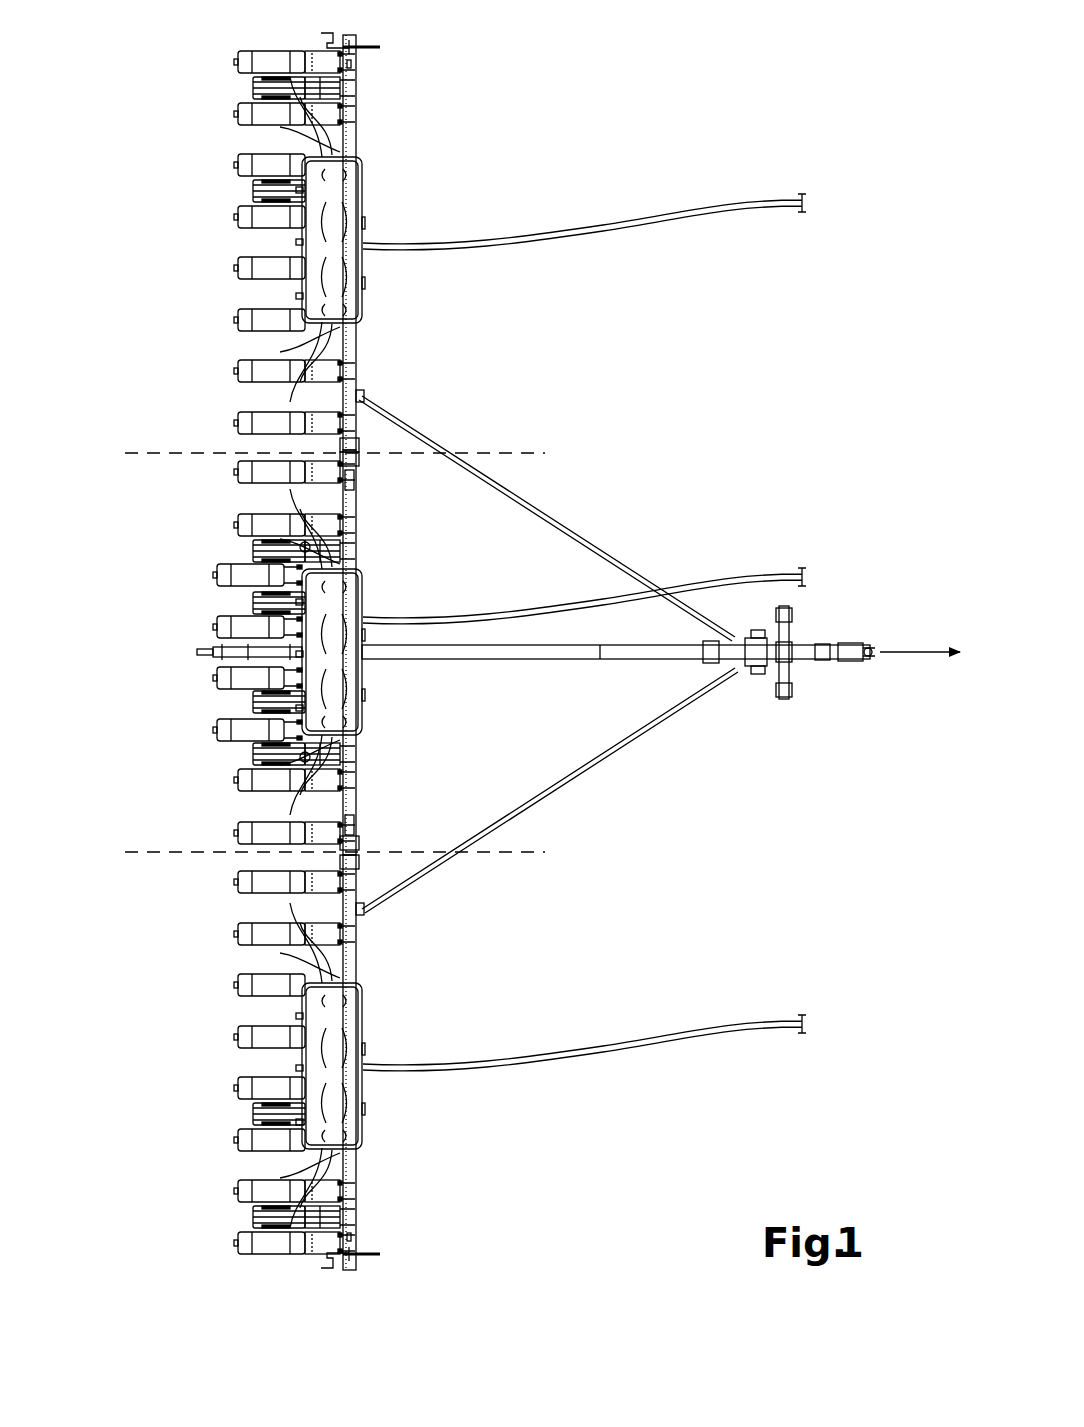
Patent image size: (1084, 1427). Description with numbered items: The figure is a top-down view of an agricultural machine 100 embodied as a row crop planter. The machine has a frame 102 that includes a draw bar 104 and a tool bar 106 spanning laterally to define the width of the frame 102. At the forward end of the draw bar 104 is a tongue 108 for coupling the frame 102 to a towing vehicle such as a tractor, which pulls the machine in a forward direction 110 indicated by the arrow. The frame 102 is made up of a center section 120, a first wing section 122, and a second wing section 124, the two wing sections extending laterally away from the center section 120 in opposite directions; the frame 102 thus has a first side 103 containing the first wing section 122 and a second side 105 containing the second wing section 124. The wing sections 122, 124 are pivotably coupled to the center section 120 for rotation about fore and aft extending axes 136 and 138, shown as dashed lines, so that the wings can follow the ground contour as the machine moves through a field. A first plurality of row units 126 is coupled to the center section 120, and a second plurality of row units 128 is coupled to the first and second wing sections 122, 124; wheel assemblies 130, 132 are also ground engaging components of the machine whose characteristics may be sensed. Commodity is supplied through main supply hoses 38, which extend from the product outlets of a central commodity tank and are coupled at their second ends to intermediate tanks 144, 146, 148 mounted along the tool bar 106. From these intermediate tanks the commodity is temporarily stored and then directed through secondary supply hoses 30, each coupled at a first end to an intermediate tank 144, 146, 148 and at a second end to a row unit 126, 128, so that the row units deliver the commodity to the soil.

The agricultural machine 100 is at (795, 830).
The frame 102 is at (592, 315).
The first side 103 is at (537, 95).
The draw bar 104 is at (553, 660).
The second side 105 is at (532, 1135).
The tool bar 106 is at (364, 945).
The tongue 108 is at (815, 648).
The forward direction 110 is at (920, 660).
The center section 120 is at (352, 830).
The first wing section 122 is at (352, 92).
The second wing section 124 is at (352, 1218).
The first plurality of row units 126 is at (213, 627).
The second plurality of row units 128 is at (234, 217).
The wheel assembly 130 is at (177, 618).
The wheel assembly 132 is at (150, 95).
The fore and aft extending axis 136 is at (515, 453).
The fore and aft extending axis 138 is at (515, 852).
The intermediate tank 144 is at (350, 680).
The first intermediate tank 146 is at (350, 265).
The second intermediate tank 148 is at (350, 1030).
The secondary supply hose 30 is at (300, 147).
The main supply hose 38 is at (748, 200).